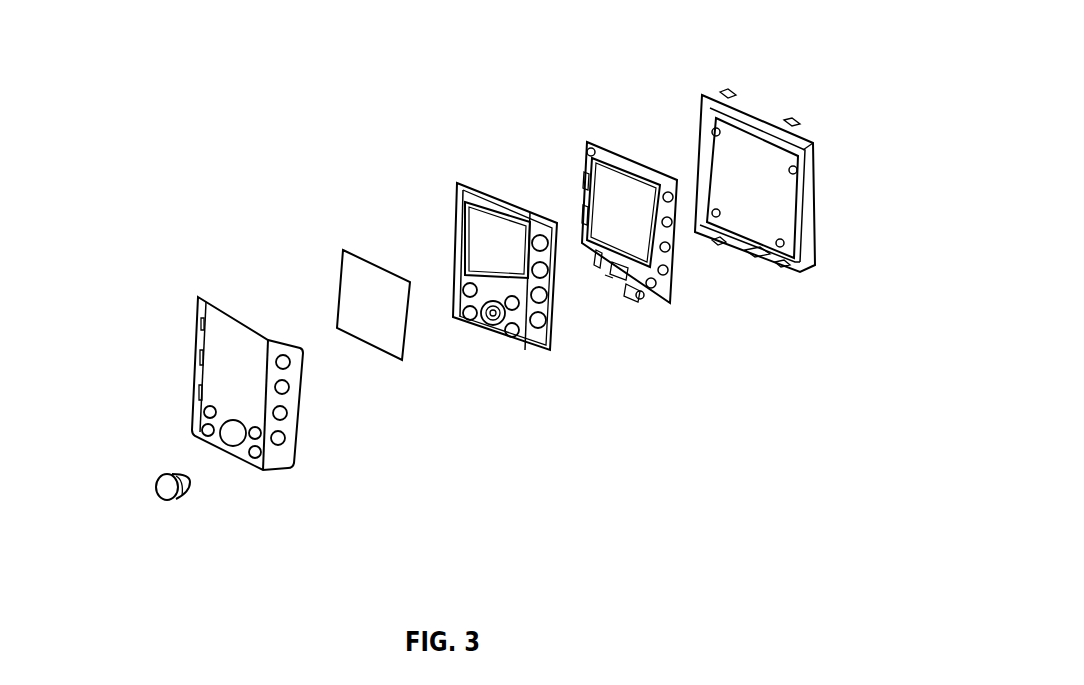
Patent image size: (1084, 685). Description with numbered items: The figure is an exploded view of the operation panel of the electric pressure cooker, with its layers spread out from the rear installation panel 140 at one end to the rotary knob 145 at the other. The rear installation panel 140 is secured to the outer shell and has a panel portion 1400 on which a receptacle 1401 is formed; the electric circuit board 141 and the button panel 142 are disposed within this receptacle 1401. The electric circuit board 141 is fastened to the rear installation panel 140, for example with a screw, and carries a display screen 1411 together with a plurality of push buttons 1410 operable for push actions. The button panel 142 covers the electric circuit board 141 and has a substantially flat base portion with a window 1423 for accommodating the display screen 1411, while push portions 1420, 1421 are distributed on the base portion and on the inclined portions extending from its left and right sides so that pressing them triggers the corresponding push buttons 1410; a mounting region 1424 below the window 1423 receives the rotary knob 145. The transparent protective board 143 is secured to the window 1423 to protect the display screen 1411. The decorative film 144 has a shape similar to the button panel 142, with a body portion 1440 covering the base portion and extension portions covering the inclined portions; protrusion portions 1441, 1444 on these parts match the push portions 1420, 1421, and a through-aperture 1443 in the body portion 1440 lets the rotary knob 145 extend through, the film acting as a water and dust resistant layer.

The housing 140 is at (828, 167).
The housing side wall 1400 is at (812, 177).
The housing cavity 1401 is at (783, 217).
The circuit board 141 is at (710, 198).
The electronic components 1410 is at (663, 257).
The display area 1411 is at (615, 190).
The front frame 142 is at (530, 278).
The left buttons 1420 is at (468, 320).
The right buttons 1421 is at (540, 330).
The display window 1423 is at (490, 225).
The rotary dial 1424 is at (515, 332).
The transparent panel 143 is at (364, 262).
The button panel 144 is at (255, 412).
The panel body 1440 is at (230, 330).
The side button holes 1441 is at (293, 430).
The dial hole 1443 is at (232, 440).
The button holes 1444 is at (253, 455).
The knob 145 is at (158, 480).